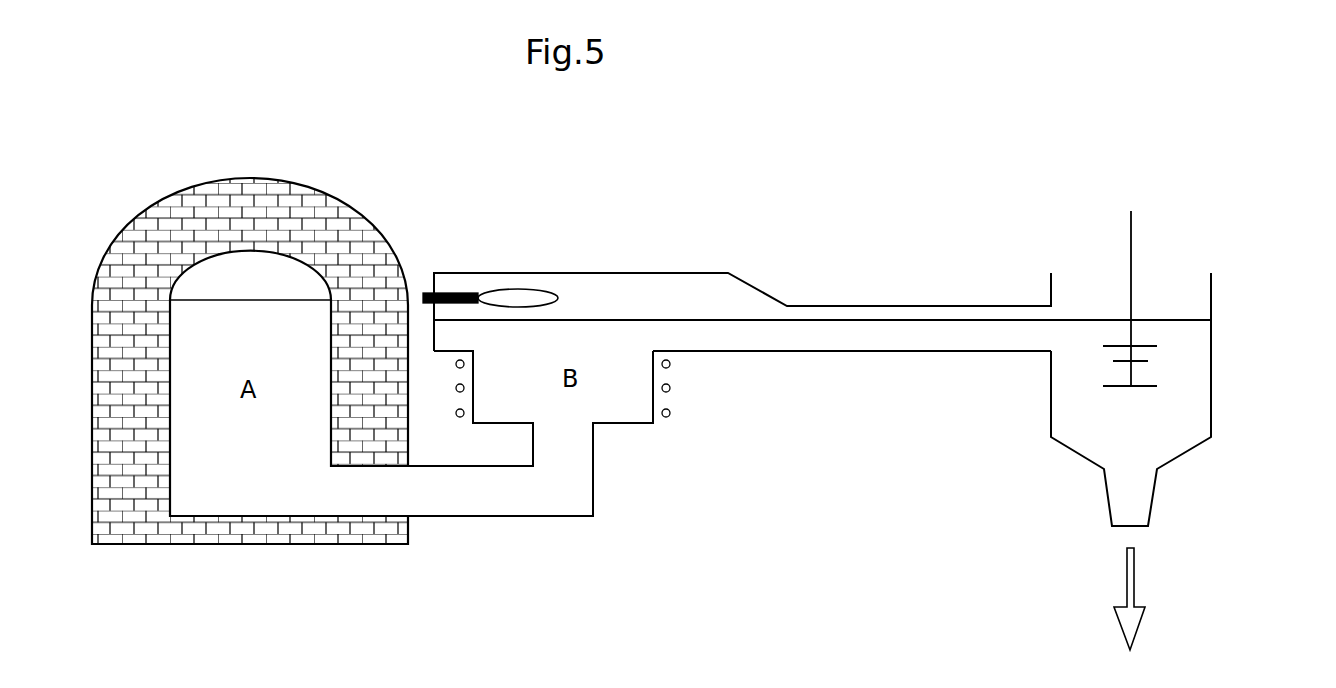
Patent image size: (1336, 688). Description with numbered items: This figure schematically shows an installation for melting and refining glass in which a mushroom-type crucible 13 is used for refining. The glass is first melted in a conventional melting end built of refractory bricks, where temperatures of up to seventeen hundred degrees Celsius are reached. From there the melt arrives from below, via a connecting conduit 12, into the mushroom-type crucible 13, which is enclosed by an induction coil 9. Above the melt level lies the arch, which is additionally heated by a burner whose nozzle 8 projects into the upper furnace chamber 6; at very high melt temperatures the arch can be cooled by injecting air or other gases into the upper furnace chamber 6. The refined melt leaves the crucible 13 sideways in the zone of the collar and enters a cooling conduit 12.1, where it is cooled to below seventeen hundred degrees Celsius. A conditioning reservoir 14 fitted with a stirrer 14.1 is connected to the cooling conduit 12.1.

The upper furnace chamber 6 is at (690, 310).
The nozzle 8 is at (455, 292).
The induction coil 9 is at (672, 390).
The connecting conduit 12 is at (525, 516).
The cooling conduit 12.1 is at (913, 352).
The mushroom-type crucible 13 is at (652, 476).
The conditioning reservoir 14 is at (1212, 295).
The stirrer 14.1 is at (1126, 226).